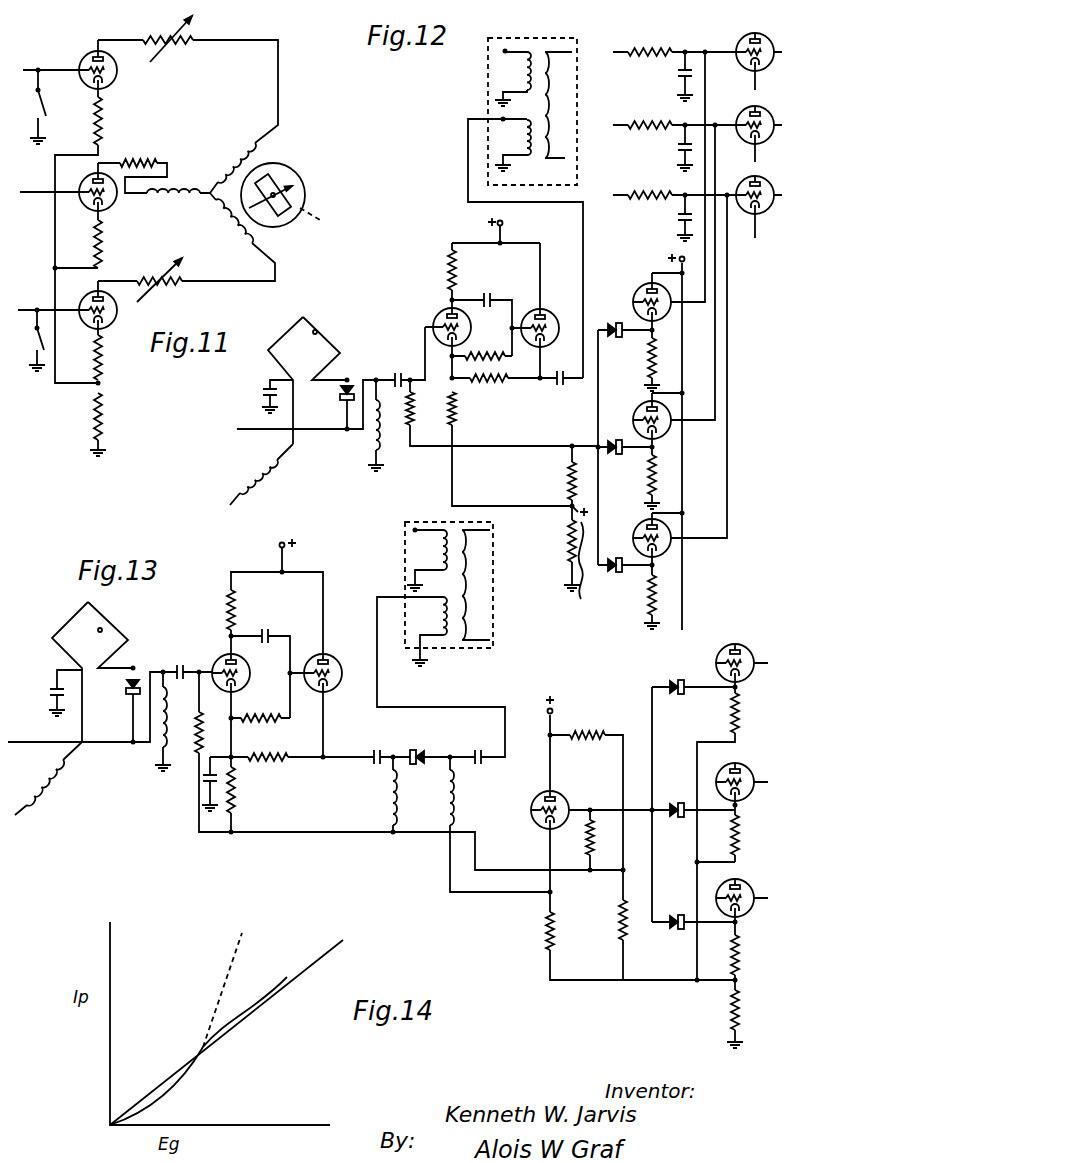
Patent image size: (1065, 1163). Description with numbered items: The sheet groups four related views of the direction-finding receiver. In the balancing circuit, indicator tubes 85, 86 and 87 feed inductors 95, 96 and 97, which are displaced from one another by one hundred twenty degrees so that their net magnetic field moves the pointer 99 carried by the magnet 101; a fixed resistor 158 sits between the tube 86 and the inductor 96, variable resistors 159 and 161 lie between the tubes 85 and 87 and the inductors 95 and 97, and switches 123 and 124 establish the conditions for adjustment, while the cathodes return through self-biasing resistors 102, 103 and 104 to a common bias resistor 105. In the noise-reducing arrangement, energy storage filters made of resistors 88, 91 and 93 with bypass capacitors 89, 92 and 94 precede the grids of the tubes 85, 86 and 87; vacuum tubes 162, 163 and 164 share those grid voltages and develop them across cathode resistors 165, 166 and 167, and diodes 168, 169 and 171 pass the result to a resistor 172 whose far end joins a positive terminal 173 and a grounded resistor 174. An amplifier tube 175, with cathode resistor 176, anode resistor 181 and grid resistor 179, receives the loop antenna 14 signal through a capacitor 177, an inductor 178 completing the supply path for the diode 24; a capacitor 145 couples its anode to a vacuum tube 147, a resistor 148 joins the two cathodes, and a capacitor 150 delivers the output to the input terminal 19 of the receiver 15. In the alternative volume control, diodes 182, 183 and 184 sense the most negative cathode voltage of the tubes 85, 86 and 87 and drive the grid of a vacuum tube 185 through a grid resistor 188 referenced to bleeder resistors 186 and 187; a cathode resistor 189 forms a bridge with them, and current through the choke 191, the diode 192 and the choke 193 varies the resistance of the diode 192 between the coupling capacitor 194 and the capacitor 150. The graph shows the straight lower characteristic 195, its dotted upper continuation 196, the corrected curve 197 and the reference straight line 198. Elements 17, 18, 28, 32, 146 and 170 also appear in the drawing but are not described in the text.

In FIG. 12, the loop antenna 14 is at (313, 331).
In FIG. 13, the loop antenna 14 is at (103, 629).
In FIG. 12, the radio receiver 15 is at (528, 38).
In FIG. 13, the radio receiver 15 is at (431, 521).
In FIG. 12, the secondary winding 17 is at (550, 104).
In FIG. 13, the secondary winding 17 is at (464, 617).
In FIG. 12, the primary winding 18 is at (522, 70).
In FIG. 13, the primary winding 18 is at (439, 553).
In FIG. 12, the input terminal 19 is at (522, 138).
In FIG. 13, the input terminal 19 is at (439, 620).
In FIG. 12, the diode 24 is at (340, 397).
In FIG. 12, the condenser 28 is at (261, 393).
In FIG. 13, the condenser 28 is at (46, 690).
In FIG. 12, the resistor 32 is at (268, 483).
In FIG. 13, the resistor 32 is at (50, 795).
In FIG. 11, the indicator tube 85 is at (92, 52).
In FIG. 12, the indicator tube 85 is at (770, 62).
In FIG. 13, the indicator tube 85 is at (750, 656).
In FIG. 11, the indicator tube 86 is at (113, 206).
In FIG. 12, the indicator tube 86 is at (770, 135).
In FIG. 13, the indicator tube 86 is at (752, 778).
In FIG. 11, the indicator tube 87 is at (108, 322).
In FIG. 12, the indicator tube 87 is at (770, 205).
In FIG. 13, the indicator tube 87 is at (752, 891).
In FIG. 12, the series resistor 88 is at (660, 46).
In FIG. 12, the bypass capacitor 89 is at (677, 75).
In FIG. 12, the resistor 91 is at (664, 118).
In FIG. 12, the bypass capacitor 92 is at (677, 147).
In FIG. 12, the resistor 93 is at (667, 188).
In FIG. 12, the bypass capacitor 94 is at (677, 218).
In FIG. 11, the inductor 95 is at (244, 146).
In FIG. 11, the inductor 96 is at (168, 200).
In FIG. 11, the inductor 97 is at (232, 243).
In FIG. 11, the pointer 99 is at (284, 176).
In FIG. 11, the magnet 101 is at (323, 219).
In FIG. 11, the self-biasing resistor 102 is at (102, 118).
In FIG. 13, the self-biasing resistor 102 is at (745, 721).
In FIG. 11, the self-biasing resistor 103 is at (104, 246).
In FIG. 13, the self-biasing resistor 103 is at (745, 839).
In FIG. 11, the self-biasing resistor 104 is at (104, 369).
In FIG. 13, the self-biasing resistor 104 is at (745, 956).
In FIG. 11, the common bias resistor 105 is at (104, 418).
In FIG. 13, the common bias resistor 105 is at (745, 1016).
In FIG. 11, the switch 123 is at (46, 112).
In FIG. 11, the switch 124 is at (26, 340).
In FIG. 12, the capacitor 145 is at (488, 294).
In FIG. 13, the capacitor 145 is at (270, 630).
In FIG. 12, the resistor 146 is at (508, 352).
In FIG. 13, the resistor 146 is at (283, 711).
In FIG. 12, the vacuum tube 147 is at (548, 316).
In FIG. 13, the vacuum tube 147 is at (337, 662).
In FIG. 12, the resistor 148 is at (490, 386).
In FIG. 13, the resistor 148 is at (272, 765).
In FIG. 12, the capacitor 150 is at (553, 392).
In FIG. 13, the capacitor 150 is at (486, 742).
In FIG. 11, the resistor 158 is at (151, 156).
In FIG. 11, the variable resistor 159 is at (183, 48).
In FIG. 11, the variable resistor 161 is at (178, 291).
In FIG. 12, the vacuum tube 162 is at (642, 286).
In FIG. 12, the vacuum tube 163 is at (641, 411).
In FIG. 12, the vacuum tube 164 is at (641, 528).
In FIG. 12, the cathode resistor 165 is at (645, 360).
In FIG. 12, the cathode resistor 166 is at (645, 485).
In FIG. 12, the cathode resistor 167 is at (640, 601).
In FIG. 12, the diode 168 is at (608, 324).
In FIG. 12, the diode 169 is at (623, 430).
In FIG. 13, the condenser 170 is at (204, 782).
In FIG. 12, the diode 171 is at (608, 558).
In FIG. 12, the resistor 172 is at (566, 482).
In FIG. 12, the terminal 173 is at (574, 562).
In FIG. 12, the resistor 174 is at (566, 547).
In FIG. 12, the amplifier tube 175 is at (446, 313).
In FIG. 13, the amplifier tube 175 is at (226, 654).
In FIG. 12, the resistor 176 is at (458, 418).
In FIG. 13, the resistor 176 is at (240, 806).
In FIG. 12, the coupling capacitor 177 is at (408, 358).
In FIG. 13, the coupling capacitor 177 is at (184, 652).
In FIG. 12, the inductor 178 is at (371, 446).
In FIG. 13, the inductor 178 is at (158, 749).
In FIG. 12, the grid resistor 179 is at (419, 400).
In FIG. 13, the grid resistor 179 is at (195, 752).
In FIG. 12, the resistor 181 is at (449, 266).
In FIG. 13, the resistor 181 is at (227, 608).
In FIG. 13, the diode 182 is at (677, 680).
In FIG. 13, the diode 183 is at (677, 802).
In FIG. 13, the diode 184 is at (680, 906).
In FIG. 13, the vacuum tube 185 is at (543, 793).
In FIG. 13, the resistor 186 is at (572, 724).
In FIG. 13, the resistor 187 is at (618, 945).
In FIG. 13, the grid resistor 188 is at (586, 845).
In FIG. 13, the cathode resistor 189 is at (556, 932).
In FIG. 13, the choke inductor 191 is at (447, 798).
In FIG. 13, the diode 192 is at (434, 738).
In FIG. 13, the choke inductor 193 is at (390, 803).
In FIG. 13, the coupling capacitor 194 is at (379, 750).
In FIG. 14, the characteristic curve 195 is at (170, 1080).
In FIG. 14, the dotted line 196 is at (233, 958).
In FIG. 14, the curve 197 is at (258, 1022).
In FIG. 14, the straight line 198 is at (320, 960).